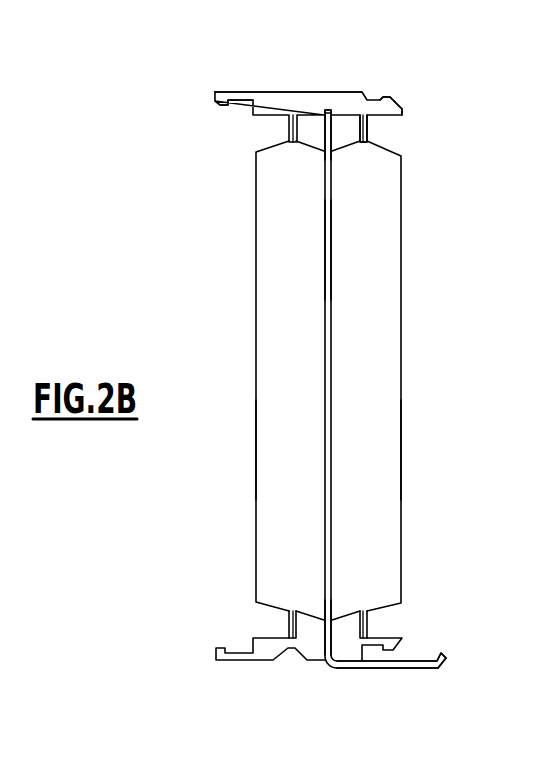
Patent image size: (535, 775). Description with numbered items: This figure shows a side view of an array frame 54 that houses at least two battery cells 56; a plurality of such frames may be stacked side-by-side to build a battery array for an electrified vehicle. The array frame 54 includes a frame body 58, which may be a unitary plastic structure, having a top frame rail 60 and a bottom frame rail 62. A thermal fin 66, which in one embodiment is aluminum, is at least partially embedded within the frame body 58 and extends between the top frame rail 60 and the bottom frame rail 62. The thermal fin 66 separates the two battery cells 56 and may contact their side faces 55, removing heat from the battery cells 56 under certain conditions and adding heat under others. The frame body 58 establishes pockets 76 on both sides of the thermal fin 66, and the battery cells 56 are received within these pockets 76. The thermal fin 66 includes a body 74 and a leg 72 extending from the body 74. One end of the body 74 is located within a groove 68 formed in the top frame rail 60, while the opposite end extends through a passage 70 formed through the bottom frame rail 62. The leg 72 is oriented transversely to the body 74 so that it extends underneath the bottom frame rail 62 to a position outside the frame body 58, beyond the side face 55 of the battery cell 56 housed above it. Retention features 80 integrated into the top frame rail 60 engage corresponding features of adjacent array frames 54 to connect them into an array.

The array frame 54 is at (373, 68).
The side face 55 is at (332, 428).
The battery cell 56 is at (302, 326).
The frame body 58 is at (382, 128).
The top frame rail 60 is at (312, 92).
The bottom frame rail 62 is at (310, 662).
The thermal fin 66 is at (345, 250).
The groove 68 is at (327, 108).
The passage 70 is at (331, 623).
The leg 72 is at (386, 666).
The body 74 is at (326, 357).
The pocket 76 is at (246, 611).
The retention feature 80 is at (226, 118).